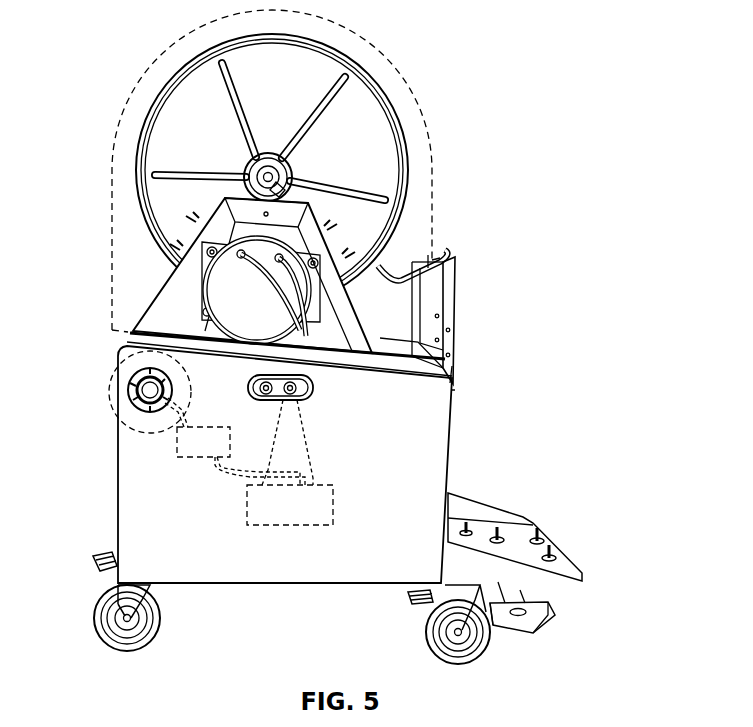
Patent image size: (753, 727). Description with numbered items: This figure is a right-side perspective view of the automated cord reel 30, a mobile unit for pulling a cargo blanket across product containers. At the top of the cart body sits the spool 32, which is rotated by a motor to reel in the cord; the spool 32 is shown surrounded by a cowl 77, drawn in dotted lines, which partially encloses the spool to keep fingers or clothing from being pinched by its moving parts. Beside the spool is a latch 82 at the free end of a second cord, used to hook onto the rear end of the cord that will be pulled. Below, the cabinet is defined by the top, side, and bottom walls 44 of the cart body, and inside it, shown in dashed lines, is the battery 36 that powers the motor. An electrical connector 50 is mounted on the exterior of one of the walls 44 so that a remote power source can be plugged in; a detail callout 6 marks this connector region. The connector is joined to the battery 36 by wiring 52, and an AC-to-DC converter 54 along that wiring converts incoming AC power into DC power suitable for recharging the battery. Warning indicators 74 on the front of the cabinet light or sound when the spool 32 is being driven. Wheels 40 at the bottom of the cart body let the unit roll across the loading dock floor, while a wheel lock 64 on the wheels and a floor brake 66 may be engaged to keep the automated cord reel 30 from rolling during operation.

The automated cord reel 30 is at (118, 75).
The spool 32 is at (358, 68).
The cowl 77 is at (395, 66).
The latch 82 is at (448, 252).
The detail view region 6 is at (108, 392).
The electrical connector 50 is at (128, 393).
The wiring 52 is at (192, 408).
The AC-to-DC converter 54 is at (173, 447).
The warning indicators 74 is at (313, 392).
The walls 44 is at (430, 473).
The battery 36 is at (288, 525).
The wheels 40 is at (162, 630).
The wheel lock 64 is at (93, 562).
The floor brake 66 is at (560, 618).